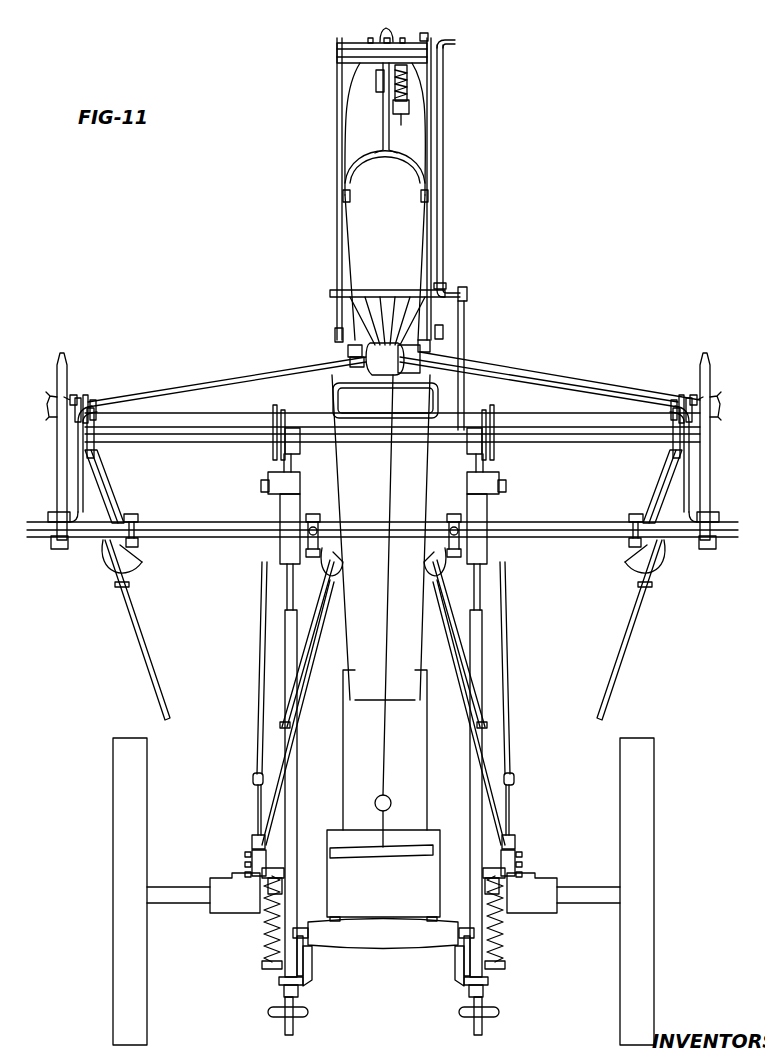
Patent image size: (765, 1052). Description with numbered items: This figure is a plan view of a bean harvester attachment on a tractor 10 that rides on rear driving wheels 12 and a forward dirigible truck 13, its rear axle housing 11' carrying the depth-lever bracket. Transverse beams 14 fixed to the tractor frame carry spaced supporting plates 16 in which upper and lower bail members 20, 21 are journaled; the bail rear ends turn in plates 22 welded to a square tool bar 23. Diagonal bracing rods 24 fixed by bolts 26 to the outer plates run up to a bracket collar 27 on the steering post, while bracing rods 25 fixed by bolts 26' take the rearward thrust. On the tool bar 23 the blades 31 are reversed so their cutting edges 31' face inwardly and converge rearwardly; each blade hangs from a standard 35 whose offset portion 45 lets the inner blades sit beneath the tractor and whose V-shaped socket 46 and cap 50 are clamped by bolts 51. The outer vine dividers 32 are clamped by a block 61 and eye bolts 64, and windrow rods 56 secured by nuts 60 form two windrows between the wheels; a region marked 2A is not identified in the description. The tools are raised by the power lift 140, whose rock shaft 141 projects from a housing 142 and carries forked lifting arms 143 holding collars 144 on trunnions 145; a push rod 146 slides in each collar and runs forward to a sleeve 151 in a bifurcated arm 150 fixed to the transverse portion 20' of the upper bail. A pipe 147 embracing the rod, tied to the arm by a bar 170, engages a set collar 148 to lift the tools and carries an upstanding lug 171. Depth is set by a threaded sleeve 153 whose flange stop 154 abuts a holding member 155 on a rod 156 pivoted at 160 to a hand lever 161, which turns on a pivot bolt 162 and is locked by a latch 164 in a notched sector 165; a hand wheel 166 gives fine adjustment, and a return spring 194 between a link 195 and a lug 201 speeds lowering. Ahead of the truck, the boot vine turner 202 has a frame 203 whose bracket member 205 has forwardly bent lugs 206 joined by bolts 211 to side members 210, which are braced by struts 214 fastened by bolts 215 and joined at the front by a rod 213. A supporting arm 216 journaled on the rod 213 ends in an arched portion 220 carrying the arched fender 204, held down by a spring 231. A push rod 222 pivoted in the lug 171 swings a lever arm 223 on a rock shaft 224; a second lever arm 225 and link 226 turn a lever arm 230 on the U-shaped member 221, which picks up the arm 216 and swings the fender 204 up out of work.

The transverse rod 213 is at (358, 55).
The lever arm 230 is at (430, 36).
The U-shaped member 221 is at (380, 60).
The spring 231 is at (408, 82).
The supporting arm 216 is at (383, 80).
The arched fender 204 is at (358, 117).
The side members 210 is at (338, 160).
The arched portion 220 is at (358, 158).
The boot vine turner 202 is at (500, 187).
The bolts 215 is at (421, 196).
The link 226 is at (444, 204).
The supporting frame 203 is at (329, 250).
The bracing struts 214 is at (422, 243).
The transverse rock shaft 224 is at (382, 298).
The second lever arm 225 is at (446, 289).
The lever arm 223 is at (467, 291).
The bracket member 205 is at (370, 345).
The bolts 211 is at (335, 337).
The lugs 206 is at (350, 352).
The forward dirigible truck 13 is at (447, 356).
The bracket collar 27 is at (385, 400).
The bifurcated arm 150 is at (300, 425).
The nuts 60 is at (48, 406).
The bolts 26' is at (388, 383).
The bolts 26 is at (379, 399).
The bracing rods 25 is at (170, 398).
The diagonal bracing rods 24 is at (180, 392).
The transverse beams 14 is at (243, 420).
The supporting plates 16 is at (95, 432).
The wing section 2A is at (590, 392).
The bail member 21 is at (73, 432).
The vine dividers 32 is at (60, 456).
The bail member 20 is at (385, 446).
The transverse portion 20' is at (392, 453).
The flange stop 154 is at (272, 460).
The sleeve 151 is at (290, 445).
The holding member 155 is at (270, 486).
The cutting edges 31' is at (370, 480).
The blades 31 is at (363, 486).
The eye bolts 64 is at (62, 518).
The cap 50 is at (140, 522).
The plates 22 is at (275, 524).
The bolts 51 is at (138, 542).
The V-shaped socket 46 is at (142, 552).
The tool standard 35 is at (108, 572).
The offset portion 45 is at (130, 568).
The block 61 is at (55, 540).
The tool bar 23 is at (210, 540).
The sleeve 153 is at (282, 540).
The set collar 148 is at (284, 578).
The rod 156 is at (260, 604).
The windrow rods 56 is at (130, 600).
The tractor 10 is at (372, 660).
The push rod 222 is at (468, 722).
The pipe 147 is at (292, 760).
The depth gauging hand lever 161 is at (257, 812).
The pivot 160 is at (254, 842).
The latch mechanism 164 is at (270, 840).
The pivot bolt 162 is at (252, 862).
The notched sector 165 is at (262, 873).
The lug 171 is at (325, 848).
The lug 201 is at (283, 885).
The rear axle housing 11' is at (384, 901).
The housing 142 is at (405, 912).
The return spring 194 is at (266, 930).
The actuating rock shaft 141 is at (310, 929).
The link 170 is at (306, 950).
The link 195 is at (266, 968).
The trunnions 145 is at (312, 972).
The power lift 140 is at (400, 960).
The forked lifting arm 143 is at (279, 982).
The collar 144 is at (286, 985).
The push rod 146 is at (300, 990).
The hand wheel 166 is at (298, 1012).
The rear driving wheels 12 is at (140, 984).